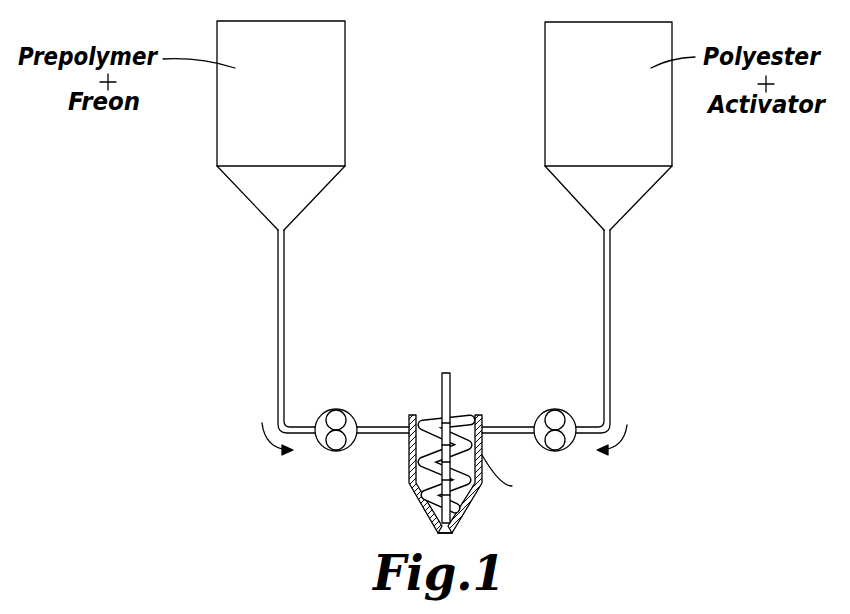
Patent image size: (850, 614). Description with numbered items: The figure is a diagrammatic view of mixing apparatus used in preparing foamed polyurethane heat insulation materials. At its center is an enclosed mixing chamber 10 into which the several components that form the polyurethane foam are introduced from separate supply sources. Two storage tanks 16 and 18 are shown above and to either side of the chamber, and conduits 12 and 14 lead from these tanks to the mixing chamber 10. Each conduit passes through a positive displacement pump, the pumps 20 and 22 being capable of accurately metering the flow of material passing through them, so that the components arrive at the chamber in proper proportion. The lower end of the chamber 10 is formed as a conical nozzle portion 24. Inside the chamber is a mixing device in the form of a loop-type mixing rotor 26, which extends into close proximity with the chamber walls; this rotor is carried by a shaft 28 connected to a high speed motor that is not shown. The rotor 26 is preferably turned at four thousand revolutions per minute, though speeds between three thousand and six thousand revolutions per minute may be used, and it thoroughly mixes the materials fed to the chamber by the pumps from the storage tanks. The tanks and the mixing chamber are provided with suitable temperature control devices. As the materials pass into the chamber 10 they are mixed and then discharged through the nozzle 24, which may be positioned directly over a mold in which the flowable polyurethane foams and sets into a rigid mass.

The mixing chamber 10 is at (408, 468).
The conduit 12 is at (503, 426).
The conduit 14 is at (377, 425).
The storage tank 16 is at (345, 123).
The storage tank 18 is at (545, 123).
The positive displacement pump 20 is at (352, 391).
The positive displacement pump 22 is at (570, 413).
The conical nozzle portion 24 is at (447, 538).
The loop-type mixing rotor 26 is at (464, 424).
The shaft 28 is at (440, 383).